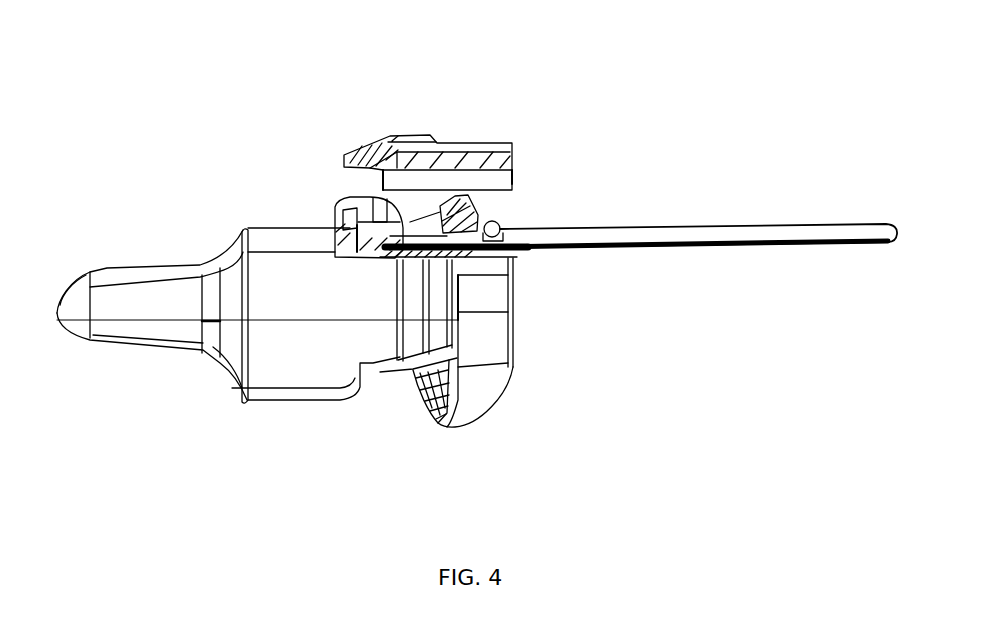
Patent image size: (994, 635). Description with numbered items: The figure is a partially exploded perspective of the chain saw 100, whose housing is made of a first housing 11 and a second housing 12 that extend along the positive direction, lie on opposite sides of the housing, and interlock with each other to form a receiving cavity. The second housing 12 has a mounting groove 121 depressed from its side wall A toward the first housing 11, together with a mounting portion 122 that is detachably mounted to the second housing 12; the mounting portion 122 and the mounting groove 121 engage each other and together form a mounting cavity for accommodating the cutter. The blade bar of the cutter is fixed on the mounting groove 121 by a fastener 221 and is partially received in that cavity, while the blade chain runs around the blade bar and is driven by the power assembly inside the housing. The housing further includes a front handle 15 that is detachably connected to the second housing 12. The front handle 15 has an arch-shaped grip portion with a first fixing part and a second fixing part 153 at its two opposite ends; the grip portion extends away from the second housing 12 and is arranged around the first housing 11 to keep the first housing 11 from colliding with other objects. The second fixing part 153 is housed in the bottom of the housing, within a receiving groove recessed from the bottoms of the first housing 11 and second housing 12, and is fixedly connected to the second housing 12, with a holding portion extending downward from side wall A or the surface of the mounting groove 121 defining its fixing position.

The chain saw 100 is at (167, 56).
The first housing 11 is at (182, 332).
The second housing 12 is at (157, 293).
The side wall A is at (295, 247).
The mounting groove 121 is at (358, 193).
The mounting portion 122 is at (504, 144).
The fastener 221 is at (502, 226).
The front handle 15 is at (417, 401).
The second fixing part 153 is at (487, 330).